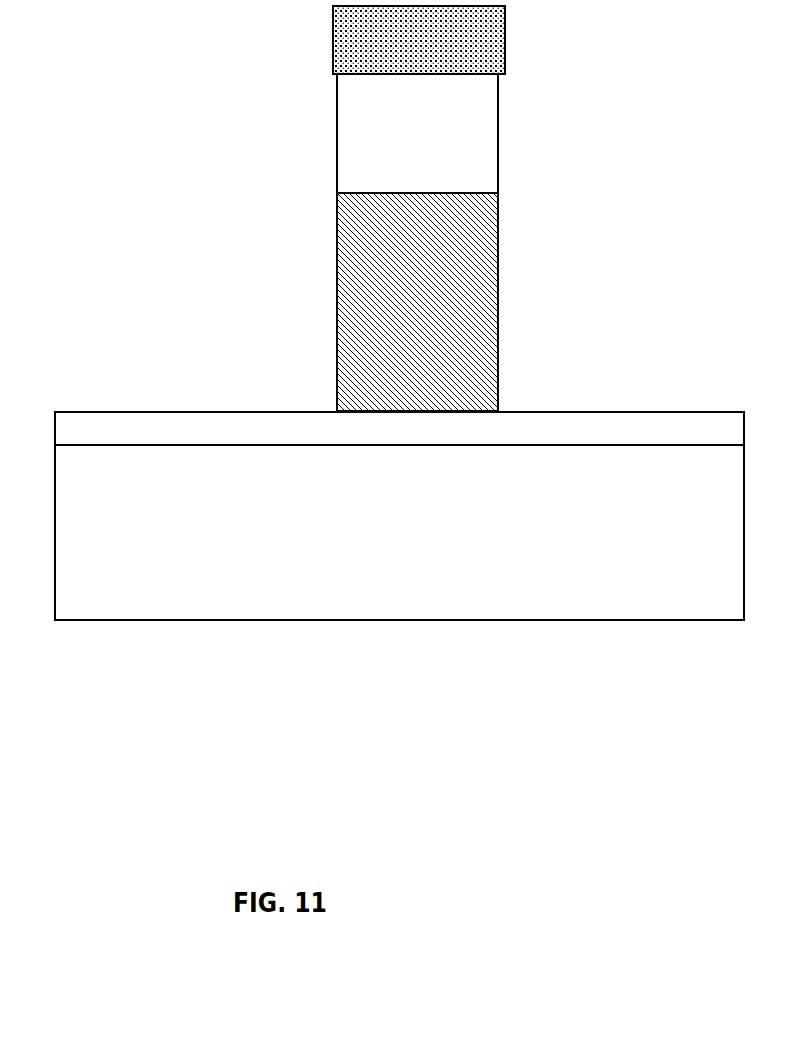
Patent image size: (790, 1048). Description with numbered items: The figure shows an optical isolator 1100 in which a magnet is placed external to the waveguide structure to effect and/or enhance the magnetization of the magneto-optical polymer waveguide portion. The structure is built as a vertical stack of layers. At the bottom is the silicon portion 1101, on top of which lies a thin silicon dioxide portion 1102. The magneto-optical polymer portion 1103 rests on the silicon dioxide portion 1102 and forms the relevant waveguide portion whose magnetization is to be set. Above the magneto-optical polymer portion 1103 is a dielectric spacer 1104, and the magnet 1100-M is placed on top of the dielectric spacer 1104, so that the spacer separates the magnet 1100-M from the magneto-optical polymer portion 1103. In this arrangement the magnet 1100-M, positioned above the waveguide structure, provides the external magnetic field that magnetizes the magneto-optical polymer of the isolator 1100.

The optical isolator 1100 is at (399, 363).
The magnet 1100-M is at (452, 50).
The silicon portion 1101 is at (212, 510).
The silicon dioxide portion 1102 is at (212, 435).
The magneto-optical polymer portion 1103 is at (444, 278).
The dielectric spacer 1104 is at (438, 121).